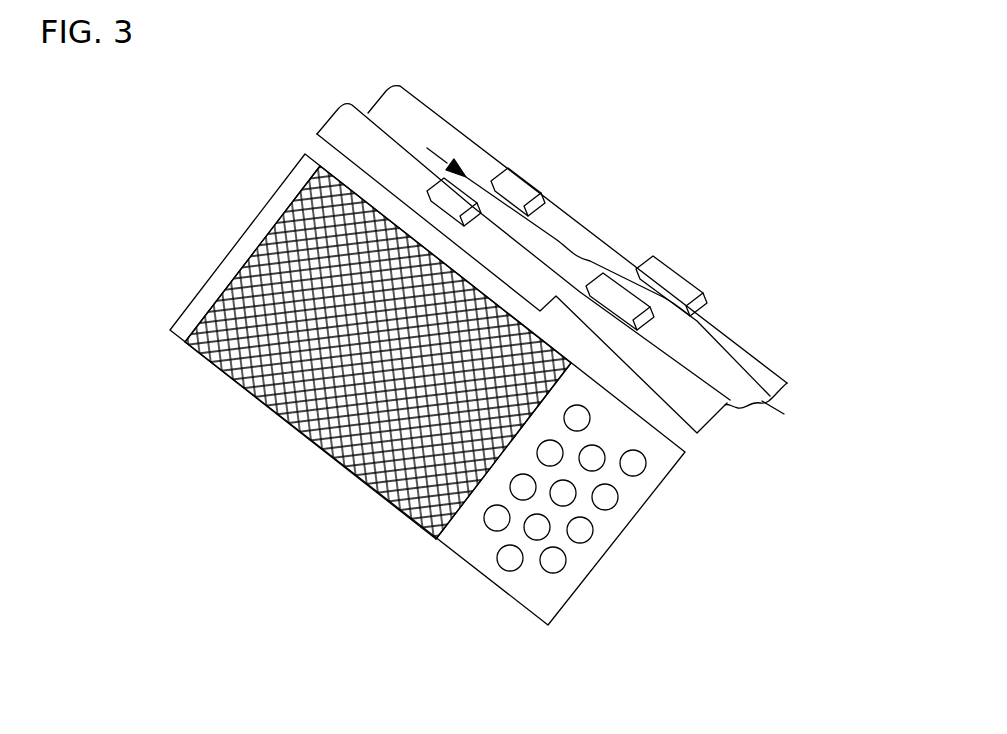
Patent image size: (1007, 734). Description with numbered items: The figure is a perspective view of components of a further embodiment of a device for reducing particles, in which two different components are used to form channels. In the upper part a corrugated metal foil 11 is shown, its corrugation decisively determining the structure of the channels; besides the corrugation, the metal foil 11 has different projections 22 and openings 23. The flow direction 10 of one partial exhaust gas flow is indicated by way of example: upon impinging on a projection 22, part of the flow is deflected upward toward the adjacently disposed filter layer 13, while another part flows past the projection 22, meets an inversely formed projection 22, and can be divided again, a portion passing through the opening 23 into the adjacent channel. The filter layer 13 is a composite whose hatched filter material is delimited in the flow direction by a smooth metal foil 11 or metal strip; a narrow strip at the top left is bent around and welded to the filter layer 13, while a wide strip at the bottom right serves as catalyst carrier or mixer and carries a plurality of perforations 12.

The flow direction 10 is at (560, 240).
The metal foil 11 is at (222, 276).
The perforations 12 is at (608, 506).
The filter layer 13 is at (238, 386).
The projection 22 is at (671, 282).
The opening 23 is at (498, 172).